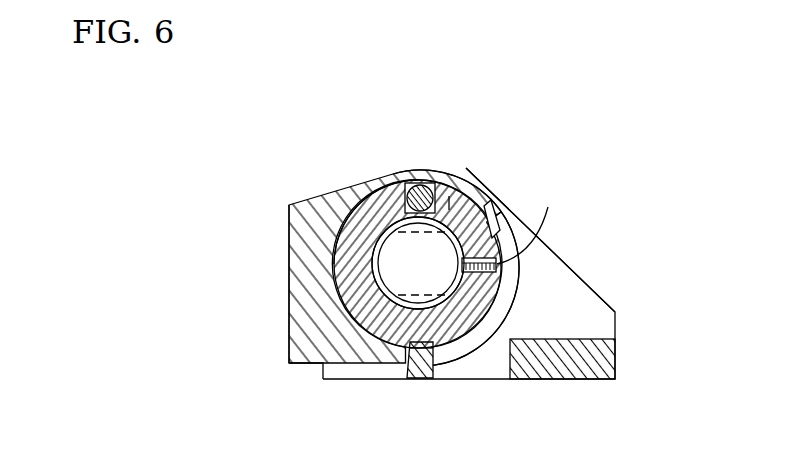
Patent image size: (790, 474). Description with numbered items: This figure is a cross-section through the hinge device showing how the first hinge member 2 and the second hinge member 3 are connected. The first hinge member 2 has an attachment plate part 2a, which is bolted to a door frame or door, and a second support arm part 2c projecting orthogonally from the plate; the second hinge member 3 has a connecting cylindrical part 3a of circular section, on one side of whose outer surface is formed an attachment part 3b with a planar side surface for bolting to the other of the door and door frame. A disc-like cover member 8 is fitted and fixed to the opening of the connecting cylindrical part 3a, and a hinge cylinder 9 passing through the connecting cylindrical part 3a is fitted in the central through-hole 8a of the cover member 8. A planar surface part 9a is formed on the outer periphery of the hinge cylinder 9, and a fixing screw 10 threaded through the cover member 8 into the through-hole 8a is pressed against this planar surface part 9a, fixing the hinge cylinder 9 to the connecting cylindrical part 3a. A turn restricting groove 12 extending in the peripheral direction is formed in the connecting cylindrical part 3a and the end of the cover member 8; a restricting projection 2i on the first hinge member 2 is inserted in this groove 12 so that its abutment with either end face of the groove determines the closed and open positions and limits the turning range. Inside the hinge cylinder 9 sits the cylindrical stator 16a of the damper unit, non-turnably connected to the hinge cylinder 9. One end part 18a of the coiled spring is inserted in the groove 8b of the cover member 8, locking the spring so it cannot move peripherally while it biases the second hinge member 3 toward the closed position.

The first hinge member 2 is at (599, 296).
The attachment plate part 2a is at (540, 370).
The second support arm part 2c is at (556, 270).
The restricting projection 2i is at (418, 370).
The second hinge member 3 is at (289, 224).
The connecting cylindrical part 3a is at (467, 183).
The attachment part 3b is at (289, 320).
The cover member 8 is at (372, 196).
The through-hole 8a is at (449, 205).
The groove 8b is at (415, 184).
The hinge cylinder 9 is at (342, 220).
The planar surface part 9a is at (493, 212).
The fixing screw 10 is at (528, 220).
The turn restricting groove 12 is at (452, 343).
The stator 16a is at (363, 270).
The one end part of the coiled spring 18a is at (405, 185).